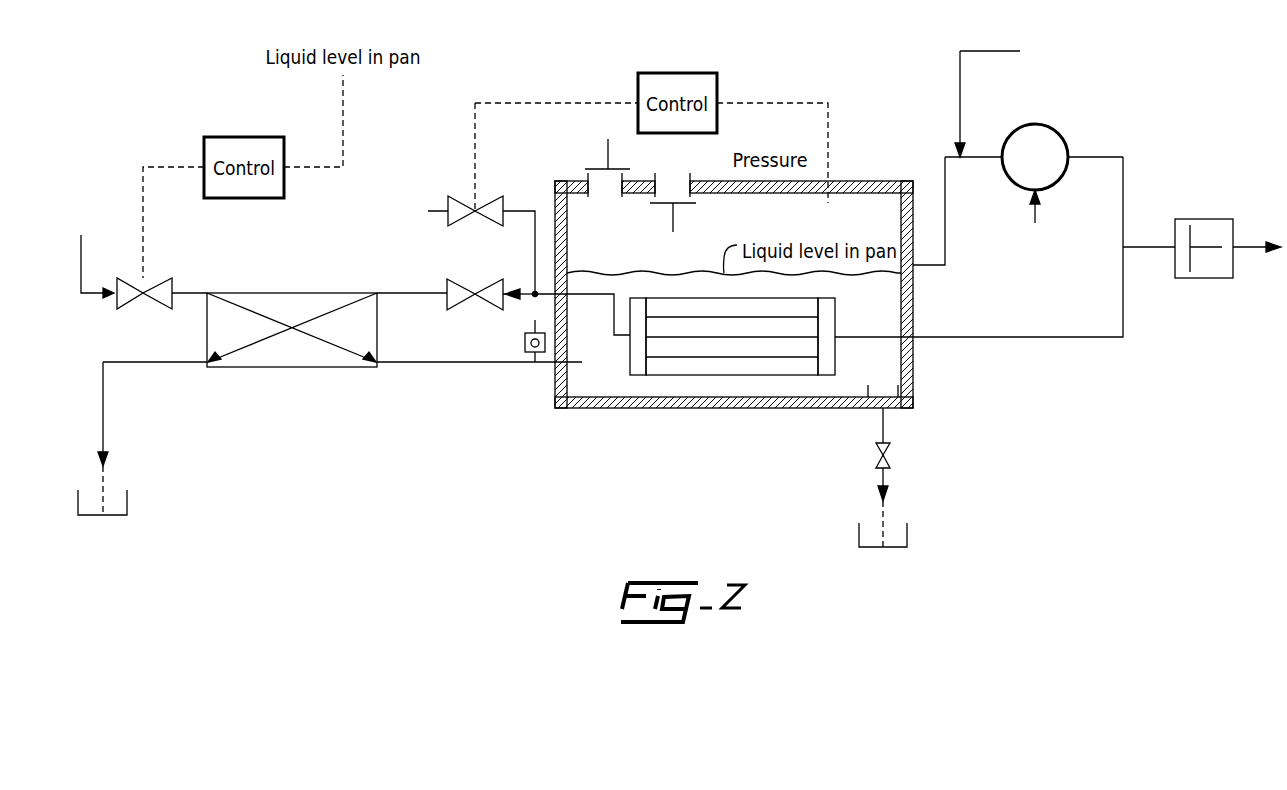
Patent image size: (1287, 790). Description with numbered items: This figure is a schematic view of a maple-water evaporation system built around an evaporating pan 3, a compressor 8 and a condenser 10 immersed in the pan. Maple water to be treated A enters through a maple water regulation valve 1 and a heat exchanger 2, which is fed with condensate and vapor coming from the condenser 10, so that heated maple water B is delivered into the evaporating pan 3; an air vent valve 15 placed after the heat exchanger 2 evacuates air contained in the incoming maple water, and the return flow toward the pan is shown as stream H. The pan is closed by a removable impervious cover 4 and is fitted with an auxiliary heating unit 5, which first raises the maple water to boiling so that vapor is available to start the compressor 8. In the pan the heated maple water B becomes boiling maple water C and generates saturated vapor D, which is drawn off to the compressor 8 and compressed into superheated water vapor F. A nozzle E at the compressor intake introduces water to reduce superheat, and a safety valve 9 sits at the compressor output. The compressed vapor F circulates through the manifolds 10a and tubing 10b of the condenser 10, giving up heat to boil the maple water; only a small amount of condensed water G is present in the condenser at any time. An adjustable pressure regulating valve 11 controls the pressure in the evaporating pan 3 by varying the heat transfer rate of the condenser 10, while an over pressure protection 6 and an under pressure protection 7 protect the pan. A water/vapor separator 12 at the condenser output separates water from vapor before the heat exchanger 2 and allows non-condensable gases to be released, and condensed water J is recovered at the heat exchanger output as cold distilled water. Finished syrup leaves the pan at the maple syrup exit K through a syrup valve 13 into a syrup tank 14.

The maple water regulation valve 1 is at (155, 306).
The heat exchanger 2 is at (285, 291).
The evaporating pan 3 is at (710, 288).
The removable impervious cover 4 is at (882, 181).
The auxiliary heating unit 5 is at (693, 409).
The over pressure protection 6 is at (598, 170).
The under pressure protection 7 is at (676, 212).
The compressor 8 is at (1012, 132).
The safety valve 9 is at (1207, 219).
The condenser 10 is at (714, 312).
The manifolds 10a is at (634, 350).
The tubing 10b is at (787, 312).
The adjustable pressure regulating valve 11 is at (473, 201).
The water/vapor separator 12 is at (488, 307).
The syrup valve 13 is at (890, 455).
The syrup tank 14 is at (907, 537).
The air vent valve 15 is at (525, 345).
The maple water to be treated A is at (95, 253).
The heated maple water B is at (410, 366).
The boiling maple water C is at (590, 375).
The saturated vapor D is at (765, 218).
The nozzle E is at (997, 98).
The superheated water vapor F is at (830, 330).
The condensed water G is at (638, 367).
The return stream H is at (408, 293).
The condensed water J is at (127, 505).
The maple syrup exit K is at (886, 392).